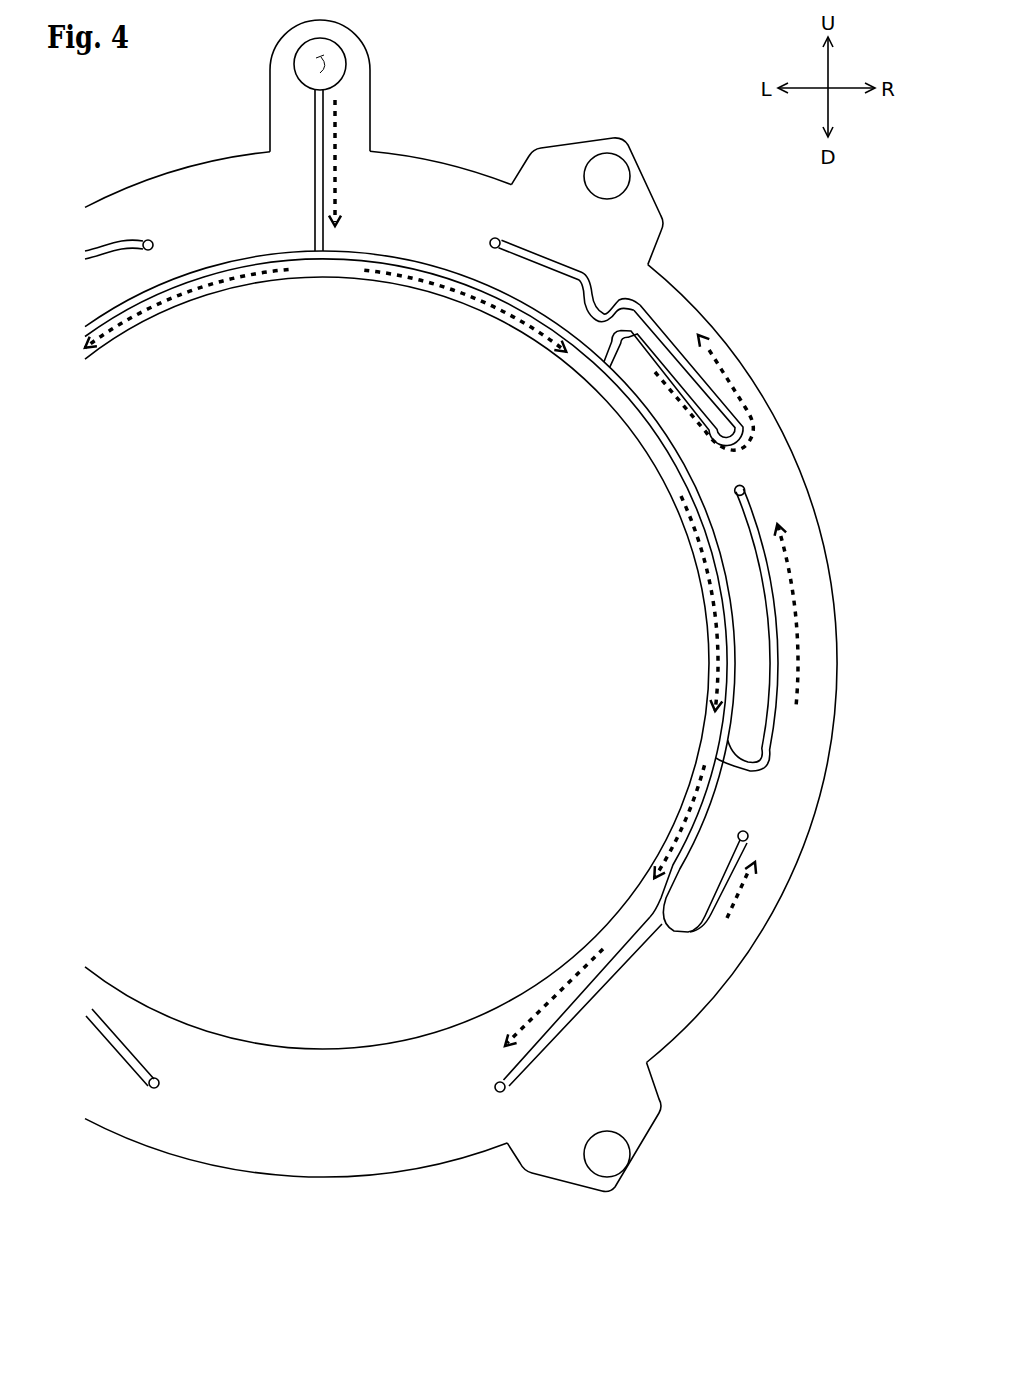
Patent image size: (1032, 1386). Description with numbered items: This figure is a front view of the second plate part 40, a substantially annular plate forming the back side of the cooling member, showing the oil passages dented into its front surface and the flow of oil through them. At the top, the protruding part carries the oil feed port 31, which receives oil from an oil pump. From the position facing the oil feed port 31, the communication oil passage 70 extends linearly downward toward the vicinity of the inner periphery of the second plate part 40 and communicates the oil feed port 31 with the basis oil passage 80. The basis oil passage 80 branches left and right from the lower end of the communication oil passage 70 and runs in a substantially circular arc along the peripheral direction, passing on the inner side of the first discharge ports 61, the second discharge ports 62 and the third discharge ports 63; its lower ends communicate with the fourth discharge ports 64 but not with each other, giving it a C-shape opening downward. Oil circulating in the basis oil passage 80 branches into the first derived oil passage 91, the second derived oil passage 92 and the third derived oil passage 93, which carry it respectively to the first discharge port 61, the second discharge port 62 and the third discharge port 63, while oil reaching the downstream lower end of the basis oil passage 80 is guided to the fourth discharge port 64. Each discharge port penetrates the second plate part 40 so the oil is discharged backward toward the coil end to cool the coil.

The oil feed port 31 is at (340, 49).
The second plate part 40 is at (212, 172).
The communication oil passage 70 is at (317, 121).
The basis oil passage 80 is at (362, 258).
The first discharge ports 61 is at (493, 238).
The second discharge ports 62 is at (747, 487).
The third discharge ports 63 is at (748, 840).
The fourth discharge ports 64 is at (499, 1092).
The first derived oil passages 91 is at (668, 313).
The second derived oil passages 92 is at (777, 718).
The third derived oil passages 93 is at (727, 928).